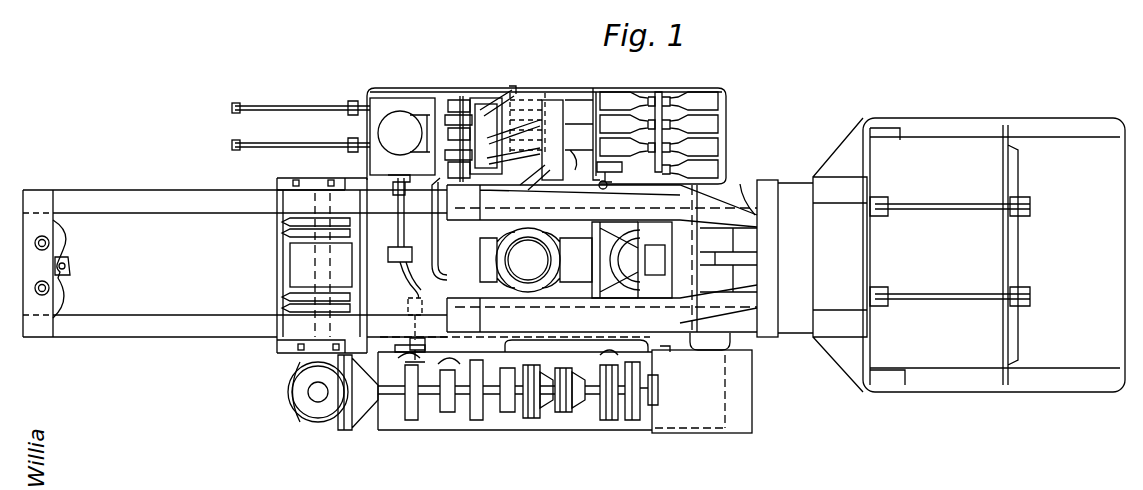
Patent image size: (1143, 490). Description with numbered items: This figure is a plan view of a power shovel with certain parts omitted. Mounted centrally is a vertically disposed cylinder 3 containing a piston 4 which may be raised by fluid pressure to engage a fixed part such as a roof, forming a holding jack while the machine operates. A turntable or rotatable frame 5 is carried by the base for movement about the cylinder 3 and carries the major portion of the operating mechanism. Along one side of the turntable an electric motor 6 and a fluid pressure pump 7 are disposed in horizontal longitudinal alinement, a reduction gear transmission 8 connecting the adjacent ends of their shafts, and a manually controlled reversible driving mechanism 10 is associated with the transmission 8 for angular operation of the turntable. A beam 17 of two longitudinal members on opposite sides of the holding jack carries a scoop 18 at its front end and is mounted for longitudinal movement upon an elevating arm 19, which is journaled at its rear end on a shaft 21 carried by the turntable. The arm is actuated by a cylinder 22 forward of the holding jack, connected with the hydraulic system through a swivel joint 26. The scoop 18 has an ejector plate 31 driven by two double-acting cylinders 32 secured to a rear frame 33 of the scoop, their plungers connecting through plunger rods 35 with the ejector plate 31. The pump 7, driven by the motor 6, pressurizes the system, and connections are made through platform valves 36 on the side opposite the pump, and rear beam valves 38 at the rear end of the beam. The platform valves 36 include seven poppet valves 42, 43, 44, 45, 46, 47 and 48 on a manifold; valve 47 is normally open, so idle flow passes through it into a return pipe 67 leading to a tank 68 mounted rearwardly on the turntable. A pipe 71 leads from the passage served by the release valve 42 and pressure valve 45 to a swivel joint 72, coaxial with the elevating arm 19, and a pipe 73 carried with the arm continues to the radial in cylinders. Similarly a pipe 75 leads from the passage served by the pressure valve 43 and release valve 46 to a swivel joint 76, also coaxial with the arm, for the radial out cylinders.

The cylinder 3 is at (560, 240).
The piston 4 is at (528, 260).
The turntable 5 is at (695, 275).
The electric motor 6 is at (754, 400).
The fluid pressure pump 7 is at (452, 425).
The reduction gear transmission 8 is at (600, 422).
The reversible driving mechanism 10 is at (570, 415).
The beam 17 is at (790, 215).
The scoop 18 is at (965, 392).
The elevating arm 19 is at (402, 238).
The shaft 21 is at (406, 284).
The cylinder 22 is at (660, 258).
The swivel joint 26 is at (618, 180).
The ejector plate 31 is at (1012, 180).
The cylinders 32 is at (884, 197).
The rear frame 33 is at (870, 167).
The plunger rods 35 is at (965, 210).
The platform valves 36 is at (663, 134).
The rear beam valves 38 is at (62, 248).
The release valve 42 is at (627, 101).
The pressure valve 43 is at (627, 124).
The poppet valve 44 is at (627, 147).
The pressure valve 45 is at (690, 101).
The release valve 46 is at (690, 124).
The poppet valve 47 is at (690, 147).
The poppet valve 48 is at (690, 169).
The return pipe 67 is at (545, 96).
The tank 68 is at (398, 98).
The pipe 71 is at (513, 92).
The swivel joint 72 is at (446, 100).
The pipe 73 is at (488, 98).
The pipe 75 is at (535, 170).
The swivel joint 76 is at (410, 158).